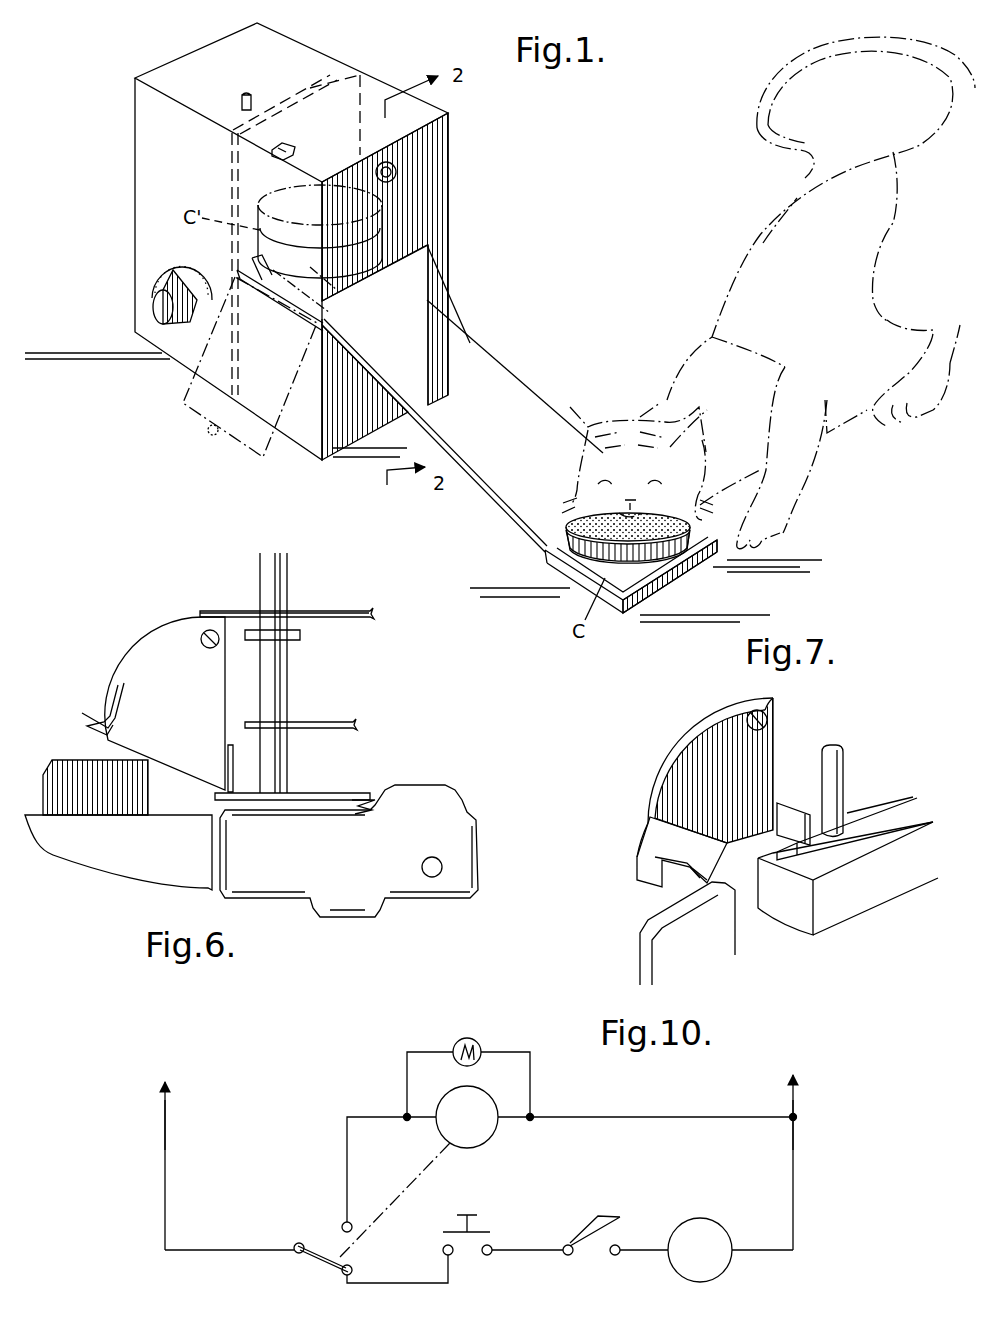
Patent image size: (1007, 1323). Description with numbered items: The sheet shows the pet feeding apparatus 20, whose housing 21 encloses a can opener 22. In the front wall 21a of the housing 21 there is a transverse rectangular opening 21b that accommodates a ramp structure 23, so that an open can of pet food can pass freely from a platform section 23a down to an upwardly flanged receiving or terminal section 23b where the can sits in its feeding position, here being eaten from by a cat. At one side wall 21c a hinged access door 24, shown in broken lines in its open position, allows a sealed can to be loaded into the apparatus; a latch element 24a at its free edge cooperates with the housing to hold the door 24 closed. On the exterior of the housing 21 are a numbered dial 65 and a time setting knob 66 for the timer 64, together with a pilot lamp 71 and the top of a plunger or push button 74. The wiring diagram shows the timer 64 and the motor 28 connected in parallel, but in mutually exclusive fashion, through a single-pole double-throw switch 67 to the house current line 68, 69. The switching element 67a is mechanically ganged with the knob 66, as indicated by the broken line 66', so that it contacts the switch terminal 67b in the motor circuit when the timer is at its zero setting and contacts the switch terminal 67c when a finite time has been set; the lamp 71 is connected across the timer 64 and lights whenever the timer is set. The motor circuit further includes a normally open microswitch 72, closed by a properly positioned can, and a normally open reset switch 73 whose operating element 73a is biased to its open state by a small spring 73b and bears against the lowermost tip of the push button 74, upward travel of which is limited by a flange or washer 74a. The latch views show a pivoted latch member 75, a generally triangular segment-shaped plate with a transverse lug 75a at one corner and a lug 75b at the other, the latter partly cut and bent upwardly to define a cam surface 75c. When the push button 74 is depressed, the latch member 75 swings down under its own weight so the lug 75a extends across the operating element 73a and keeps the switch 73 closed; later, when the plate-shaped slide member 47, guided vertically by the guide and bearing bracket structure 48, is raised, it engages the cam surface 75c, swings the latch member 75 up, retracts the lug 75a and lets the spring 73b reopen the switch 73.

In FIG. 1, the pet feeding apparatus 20 is at (394, 68).
In FIG. 1, the housing 21 is at (440, 112).
In FIG. 6, the housing 21 is at (343, 612).
In FIG. 1, the front wall 21a is at (441, 192).
In FIG. 1, the transverse rectangular opening 21b is at (432, 262).
In FIG. 1, the side wall 21c is at (297, 440).
In FIG. 1, the can opener 22 is at (311, 86).
In FIG. 1, the ramp structure 23 is at (470, 338).
In FIG. 1, the platform section 23a is at (278, 290).
In FIG. 1, the receiving or terminal section 23b is at (627, 613).
In FIG. 1, the hinged access door 24 is at (247, 172).
In FIG. 1, the latch element 24a is at (292, 152).
In FIG. 10, the motor 28 is at (703, 1233).
In FIG. 6, the slide member 47 is at (63, 767).
In FIG. 7, the slide member 47 is at (665, 945).
In FIG. 6, the guide and bearing bracket structure 48 is at (123, 862).
In FIG. 10, the timer 64 is at (491, 1133).
In FIG. 1, the numbered dial 65 is at (173, 254).
In FIG. 1, the time setting knob 66 is at (139, 297).
In FIG. 10, the broken line 66' is at (415, 1200).
In FIG. 10, the single-pole double-throw switch 67 is at (340, 1244).
In FIG. 10, the switching element 67a is at (323, 1260).
In FIG. 10, the switch terminal 67b is at (353, 1270).
In FIG. 10, the switch terminal 67c is at (332, 1237).
In FIG. 10, the house current line 68 is at (795, 1098).
In FIG. 10, the house current line 69 is at (167, 1122).
In FIG. 1, the indicator or pilot lamp 71 is at (398, 172).
In FIG. 10, the indicator or pilot lamp 71 is at (472, 1037).
In FIG. 10, the microswitch 72 is at (593, 1247).
In FIG. 6, the reset switch 73 is at (478, 846).
In FIG. 7, the reset switch 73 is at (867, 900).
In FIG. 10, the reset switch 73 is at (470, 1250).
In FIG. 6, the operating element 73a is at (307, 792).
In FIG. 7, the operating element 73a is at (888, 797).
In FIG. 6, the spring 73b is at (358, 810).
In FIG. 1, the plunger or push button 74 is at (247, 93).
In FIG. 6, the plunger or push button 74 is at (281, 687).
In FIG. 7, the plunger or push button 74 is at (836, 785).
In FIG. 6, the flange or washer 74a is at (300, 638).
In FIG. 6, the latch member 75 is at (167, 643).
In FIG. 7, the latch member 75 is at (700, 752).
In FIG. 6, the lug 75a is at (227, 772).
In FIG. 7, the lug 75a is at (792, 808).
In FIG. 7, the lug 75b is at (658, 830).
In FIG. 6, the cam surface 75c is at (112, 732).
In FIG. 7, the cam surface 75c is at (680, 883).